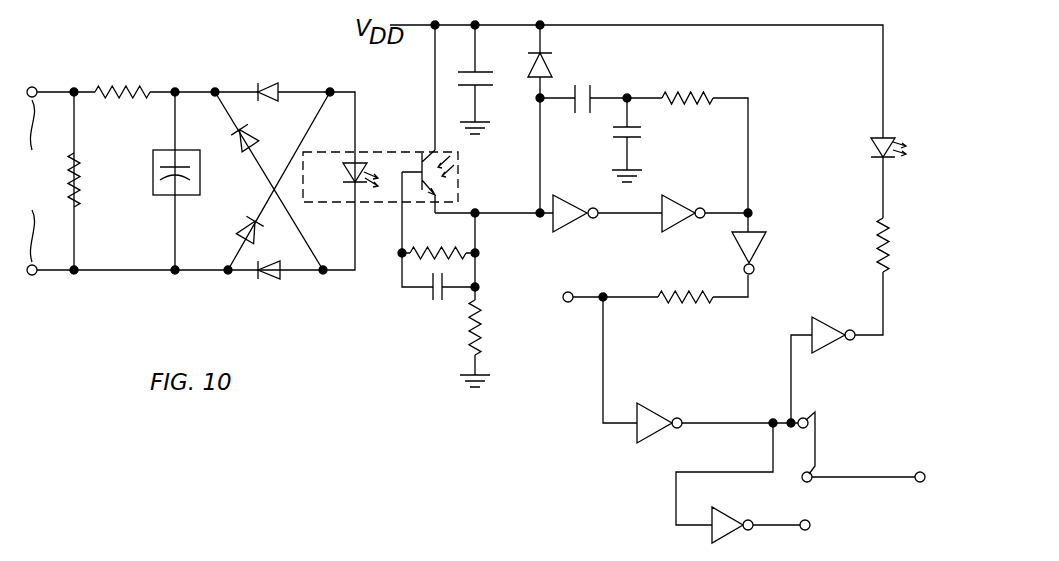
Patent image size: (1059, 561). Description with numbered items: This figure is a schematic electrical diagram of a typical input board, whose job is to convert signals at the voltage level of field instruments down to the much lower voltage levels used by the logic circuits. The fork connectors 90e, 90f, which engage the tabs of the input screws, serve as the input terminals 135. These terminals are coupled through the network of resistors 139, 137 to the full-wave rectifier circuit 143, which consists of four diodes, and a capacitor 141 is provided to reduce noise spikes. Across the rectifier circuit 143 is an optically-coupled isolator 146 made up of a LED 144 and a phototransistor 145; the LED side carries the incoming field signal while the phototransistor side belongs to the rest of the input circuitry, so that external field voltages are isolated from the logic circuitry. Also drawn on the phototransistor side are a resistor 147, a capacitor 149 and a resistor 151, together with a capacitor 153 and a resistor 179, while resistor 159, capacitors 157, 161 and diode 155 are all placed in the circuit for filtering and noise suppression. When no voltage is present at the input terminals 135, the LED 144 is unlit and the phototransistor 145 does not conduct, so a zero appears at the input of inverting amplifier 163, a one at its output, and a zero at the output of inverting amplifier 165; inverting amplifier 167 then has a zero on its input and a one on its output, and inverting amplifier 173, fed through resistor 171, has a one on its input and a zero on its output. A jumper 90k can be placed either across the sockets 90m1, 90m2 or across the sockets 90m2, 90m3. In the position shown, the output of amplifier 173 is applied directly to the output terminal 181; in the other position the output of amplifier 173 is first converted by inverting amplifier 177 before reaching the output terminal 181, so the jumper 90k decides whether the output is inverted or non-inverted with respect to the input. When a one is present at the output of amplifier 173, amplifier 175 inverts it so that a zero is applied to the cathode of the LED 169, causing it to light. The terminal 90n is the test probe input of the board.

The fork connector 90e is at (39, 77).
The fork connector 90f is at (34, 284).
The input terminals 135 is at (25, 181).
The resistor 137 is at (80, 166).
The resistor 139 is at (149, 90).
The capacitor 141 is at (153, 192).
The full-wave rectifier circuit 143 is at (300, 136).
The LED 144 is at (341, 179).
The phototransistor 145 is at (417, 159).
The optically-coupled isolator 146 is at (408, 116).
The resistor 147 is at (460, 253).
The capacitor 149 is at (434, 302).
The resistor 151 is at (480, 332).
The capacitor 153 is at (479, 70).
The diode 155 is at (549, 62).
The capacitor 157 is at (592, 95).
The resistor 159 is at (713, 97).
The capacitor 161 is at (637, 136).
The inverting amplifier 163 is at (568, 222).
The inverting amplifier 165 is at (676, 212).
The inverting amplifier 167 is at (752, 243).
The LED 169 is at (878, 143).
The resistor 171 is at (712, 292).
The inverting amplifier 173 is at (652, 420).
The inverting amplifier 175 is at (822, 348).
The inverting amplifier 177 is at (720, 525).
The resistor 179 is at (877, 258).
The output terminal 181 is at (927, 490).
The terminal 90n is at (575, 312).
The jumper 90k is at (818, 440).
The socket 90m1 is at (806, 418).
The socket 90m2 is at (811, 473).
The socket 90m3 is at (810, 523).